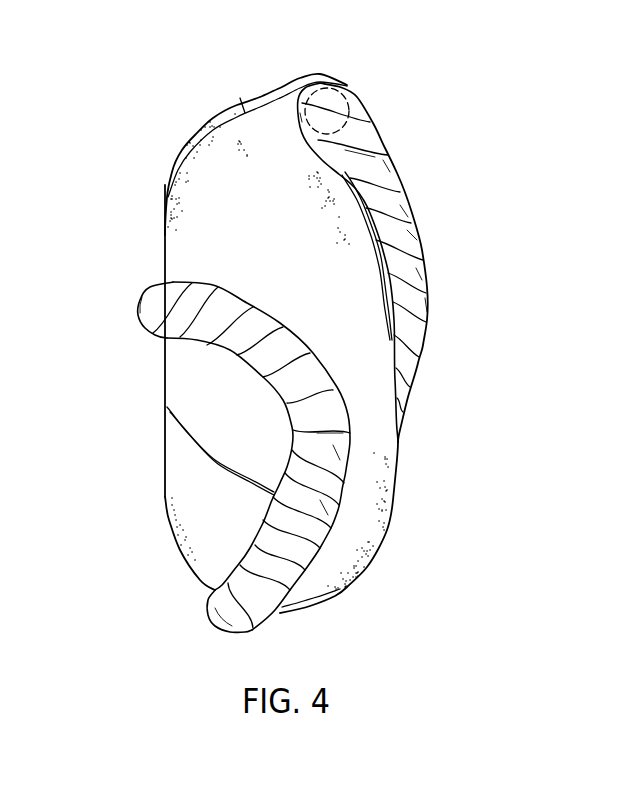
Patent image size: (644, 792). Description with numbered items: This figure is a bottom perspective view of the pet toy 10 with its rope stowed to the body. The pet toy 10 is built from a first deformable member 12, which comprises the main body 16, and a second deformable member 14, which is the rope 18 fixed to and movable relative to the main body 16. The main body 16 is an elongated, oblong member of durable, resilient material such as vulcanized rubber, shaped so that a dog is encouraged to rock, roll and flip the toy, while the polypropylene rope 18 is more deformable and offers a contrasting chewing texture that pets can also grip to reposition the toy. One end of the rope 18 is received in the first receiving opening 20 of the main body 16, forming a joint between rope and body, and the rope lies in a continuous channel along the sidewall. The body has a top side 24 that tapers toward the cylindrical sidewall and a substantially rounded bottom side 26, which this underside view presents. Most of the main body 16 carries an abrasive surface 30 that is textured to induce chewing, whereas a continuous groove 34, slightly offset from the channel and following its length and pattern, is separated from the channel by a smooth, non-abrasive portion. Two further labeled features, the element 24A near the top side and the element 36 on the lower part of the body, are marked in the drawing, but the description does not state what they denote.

The pet toy 10 is at (115, 193).
The first deformable member 12 is at (310, 263).
The second deformable member 14 is at (403, 171).
The main body 16 is at (370, 450).
The rope 18 is at (413, 303).
The first receiving opening 20 is at (344, 110).
The top side 24 is at (243, 98).
The top edge band 24A is at (215, 114).
The bottom side 26 is at (323, 590).
The abrasive surface 30 is at (180, 495).
The continuous groove 34 is at (190, 447).
The second rope portion 36 is at (200, 373).